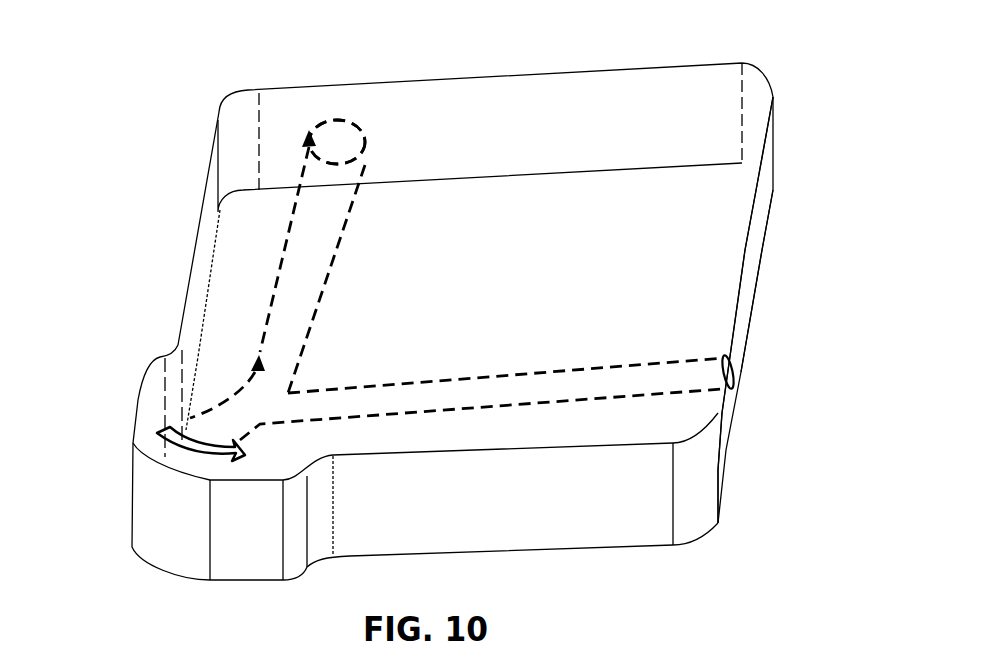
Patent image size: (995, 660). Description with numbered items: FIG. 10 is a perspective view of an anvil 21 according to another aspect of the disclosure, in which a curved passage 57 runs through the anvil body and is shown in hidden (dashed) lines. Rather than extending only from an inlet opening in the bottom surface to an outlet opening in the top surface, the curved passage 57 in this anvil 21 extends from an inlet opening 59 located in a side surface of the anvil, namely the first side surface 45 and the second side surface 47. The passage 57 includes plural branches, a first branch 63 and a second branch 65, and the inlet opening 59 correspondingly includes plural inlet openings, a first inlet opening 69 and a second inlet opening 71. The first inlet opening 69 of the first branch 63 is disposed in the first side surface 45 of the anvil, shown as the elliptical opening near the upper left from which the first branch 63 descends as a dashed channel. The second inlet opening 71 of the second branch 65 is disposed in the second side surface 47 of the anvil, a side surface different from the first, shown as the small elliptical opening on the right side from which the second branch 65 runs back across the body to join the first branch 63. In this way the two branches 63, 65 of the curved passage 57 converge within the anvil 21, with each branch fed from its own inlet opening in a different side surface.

The anvil 21 is at (803, 106).
The first side surface 45 is at (450, 115).
The second side surface 47 is at (755, 233).
The curved passage 57 is at (252, 362).
The inlet opening 59 is at (303, 128).
The first branch 63 is at (300, 273).
The second branch 65 is at (465, 400).
The first inlet opening 69 is at (330, 137).
The second inlet opening 71 is at (731, 393).